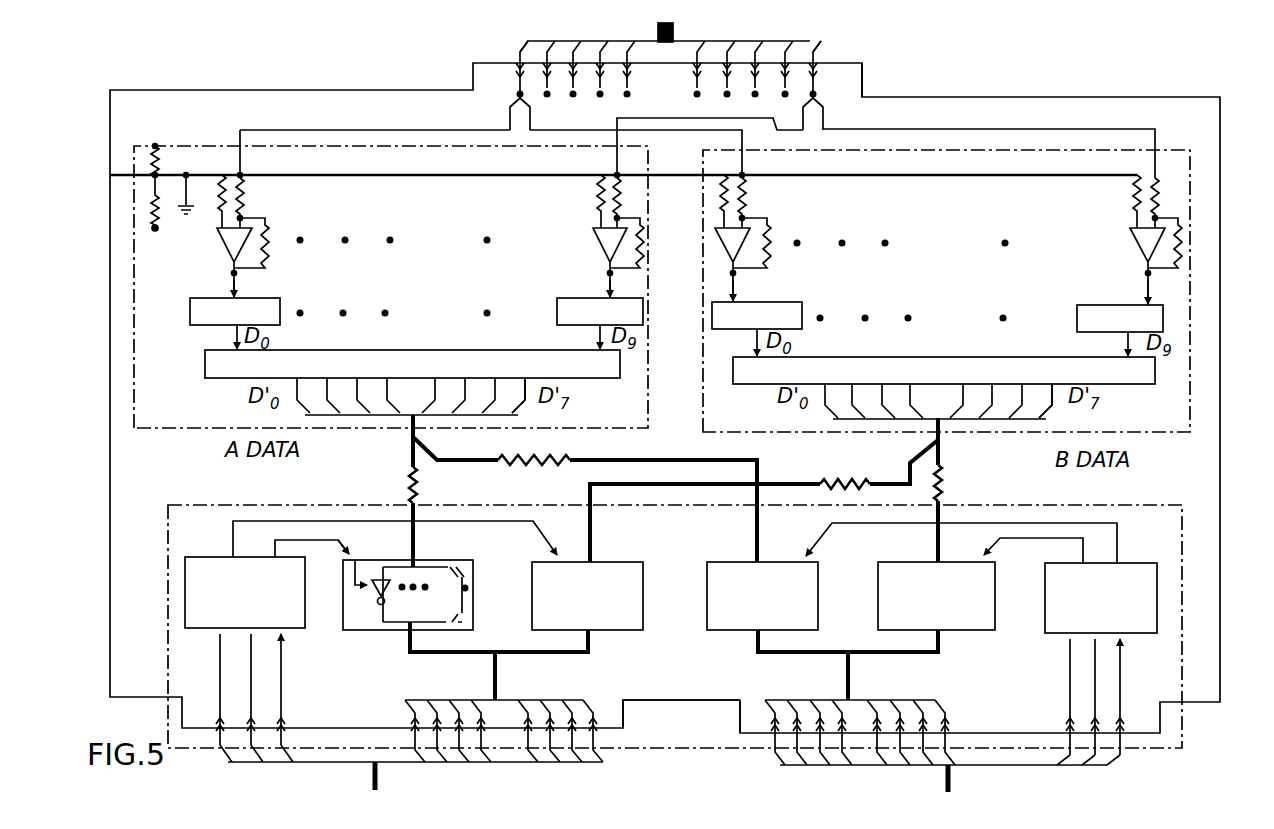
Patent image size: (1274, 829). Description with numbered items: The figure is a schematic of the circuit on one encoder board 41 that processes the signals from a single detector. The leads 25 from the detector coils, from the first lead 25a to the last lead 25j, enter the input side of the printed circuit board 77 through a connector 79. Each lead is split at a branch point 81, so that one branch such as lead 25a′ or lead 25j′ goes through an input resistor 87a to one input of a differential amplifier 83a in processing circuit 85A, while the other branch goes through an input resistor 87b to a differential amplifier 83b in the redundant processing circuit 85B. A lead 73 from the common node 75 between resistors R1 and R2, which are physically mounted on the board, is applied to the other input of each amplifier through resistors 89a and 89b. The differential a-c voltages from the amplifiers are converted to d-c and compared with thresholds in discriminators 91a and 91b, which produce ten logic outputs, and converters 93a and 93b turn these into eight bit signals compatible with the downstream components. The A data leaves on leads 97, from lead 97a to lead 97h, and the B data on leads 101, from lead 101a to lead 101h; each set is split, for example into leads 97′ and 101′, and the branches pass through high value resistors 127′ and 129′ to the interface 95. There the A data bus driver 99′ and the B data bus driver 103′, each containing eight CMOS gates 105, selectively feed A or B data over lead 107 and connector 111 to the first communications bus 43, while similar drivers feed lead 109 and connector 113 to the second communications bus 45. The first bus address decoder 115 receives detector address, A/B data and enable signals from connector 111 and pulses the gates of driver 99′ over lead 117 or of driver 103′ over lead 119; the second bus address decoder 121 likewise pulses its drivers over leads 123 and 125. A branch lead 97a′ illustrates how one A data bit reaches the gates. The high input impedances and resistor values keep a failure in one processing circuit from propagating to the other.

The detector coil leads 25 is at (674, 40).
The first detector coil lead 25a is at (514, 49).
The last detector coil lead 25j is at (820, 47).
The split lead to processing circuit A 25a′ is at (432, 130).
The split lead to processing circuit A 25j′ is at (778, 128).
The encoder board 41 is at (1000, 72).
The communications bus No. 1 43 is at (372, 779).
The communications bus No. 2 45 is at (946, 786).
The common node lead 73 is at (208, 174).
The common node 75 is at (113, 176).
The printed circuit board 77 is at (1062, 97).
The connector 79 is at (864, 78).
The branch point 81 is at (516, 100).
The processing circuit A 85A is at (186, 144).
The processing circuit B 85B is at (1180, 150).
The input resistor A 87a is at (245, 196).
The input resistor B 87b is at (750, 197).
The input resistor A 89a is at (223, 205).
The input resistor B 89b is at (722, 201).
The differential amplifier A 83a is at (226, 248).
The differential amplifier B 83b is at (718, 242).
The discriminator A 91a is at (265, 298).
The discriminator B 91b is at (783, 302).
The converter A 93a is at (218, 378).
The converter B 93b is at (1122, 382).
The A data lead 97a is at (297, 414).
The A data lead 97h is at (522, 413).
The B data lead 101a is at (825, 414).
The B data lead 101h is at (1050, 417).
The A data leads 97 is at (412, 429).
The split A data leads 97′ is at (412, 456).
The B data leads 101 is at (934, 429).
The split B data leads 101′ is at (795, 483).
The isolation resistor 127′ is at (417, 491).
The isolation resistor 129′ is at (862, 479).
The interface 95 is at (232, 503).
The Bus 1 address decoder 115 is at (201, 557).
The enable lead 117 is at (299, 540).
The enable lead 119 is at (252, 520).
The split A data lead 97a′ is at (393, 562).
The A data bus driver 99′ is at (438, 560).
The CMOS gate 105 is at (390, 597).
The B data bus driver 103′ is at (608, 562).
The Bus 2 address decoder 121 is at (1128, 563).
The enable lead 123 is at (1060, 523).
The enable lead 125 is at (1043, 539).
The bus lead 107 is at (498, 679).
The bus lead 109 is at (858, 679).
The bus 1 connector 111 is at (622, 714).
The bus 2 connector 113 is at (740, 719).
The resistor R1 is at (160, 160).
The resistor R2 is at (150, 210).